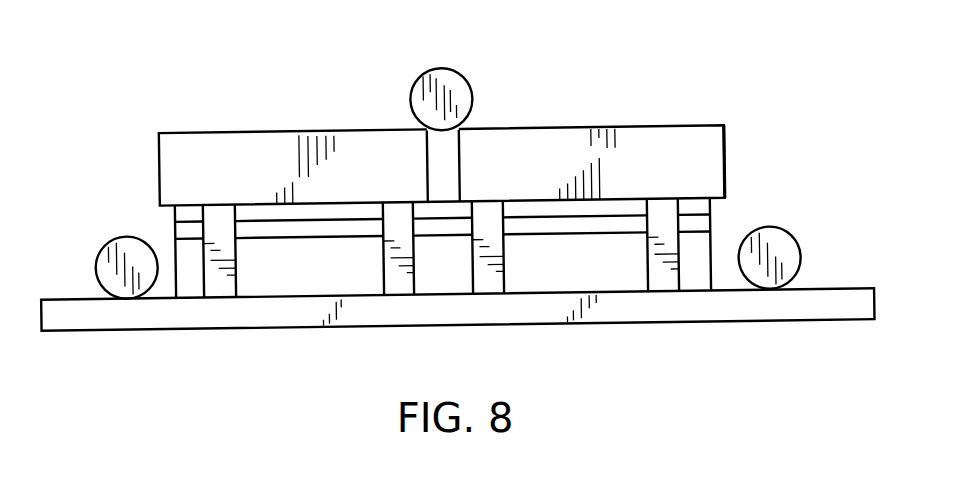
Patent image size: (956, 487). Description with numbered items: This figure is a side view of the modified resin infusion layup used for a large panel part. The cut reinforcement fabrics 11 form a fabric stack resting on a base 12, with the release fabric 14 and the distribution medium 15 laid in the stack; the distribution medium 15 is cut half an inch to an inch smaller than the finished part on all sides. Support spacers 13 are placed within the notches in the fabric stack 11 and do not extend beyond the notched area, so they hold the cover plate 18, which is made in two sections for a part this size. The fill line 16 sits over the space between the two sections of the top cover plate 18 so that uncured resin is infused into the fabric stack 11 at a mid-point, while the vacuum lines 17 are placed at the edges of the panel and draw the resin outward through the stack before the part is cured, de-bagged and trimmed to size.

The reinforcement fabrics 11 is at (302, 272).
The substrate 12 is at (250, 320).
The support spacers 13 is at (220, 203).
The release fabric 14 is at (617, 223).
The distribution medium 15 is at (710, 208).
The fill line 16 is at (462, 72).
The vacuum lines 17 is at (95, 268).
The cover plate 18 is at (277, 130).